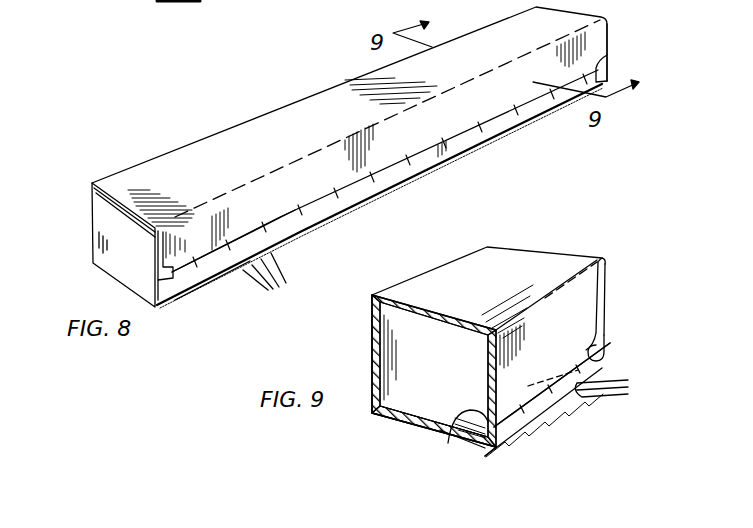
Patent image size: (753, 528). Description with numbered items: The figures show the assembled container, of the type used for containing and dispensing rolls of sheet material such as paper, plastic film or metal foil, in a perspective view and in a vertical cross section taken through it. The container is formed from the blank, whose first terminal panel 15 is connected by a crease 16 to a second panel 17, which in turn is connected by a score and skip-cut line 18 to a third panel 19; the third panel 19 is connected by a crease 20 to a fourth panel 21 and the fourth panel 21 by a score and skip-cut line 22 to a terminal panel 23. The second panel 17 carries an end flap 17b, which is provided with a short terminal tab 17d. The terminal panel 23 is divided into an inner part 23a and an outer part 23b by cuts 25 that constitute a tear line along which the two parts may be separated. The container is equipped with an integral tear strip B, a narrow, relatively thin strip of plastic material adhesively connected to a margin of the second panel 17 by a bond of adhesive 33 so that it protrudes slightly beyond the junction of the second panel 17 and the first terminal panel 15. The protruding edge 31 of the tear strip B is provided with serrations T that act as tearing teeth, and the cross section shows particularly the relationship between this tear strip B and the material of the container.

In FIG. 8, the first terminal panel 15 is at (606, 58).
In FIG. 9, the first terminal panel 15 is at (606, 328).
In FIG. 9, the crease 16 is at (505, 455).
In FIG. 9, the second panel 17 is at (405, 430).
In FIG. 8, the end flap 17b is at (108, 218).
In FIG. 8, the short terminal tab 17d is at (183, 3).
In FIG. 9, the score and skip-cut line 18 is at (388, 420).
In FIG. 9, the third panel 19 is at (376, 343).
In FIG. 8, the crease 20 is at (219, 131).
In FIG. 9, the crease 20 is at (432, 268).
In FIG. 8, the fourth panel 21 is at (337, 110).
In FIG. 9, the fourth panel 21 is at (523, 258).
In FIG. 9, the score and skip-cut line 22 is at (565, 286).
In FIG. 8, the terminal panel 23 is at (340, 203).
In FIG. 9, the terminal panel 23 is at (552, 385).
In FIG. 8, the inner part 23a is at (291, 210).
In FIG. 9, the inner part 23a is at (604, 290).
In FIG. 9, the outer part 23b is at (606, 352).
In FIG. 8, the cuts 25 is at (480, 142).
In FIG. 9, the cuts 25 is at (558, 352).
In FIG. 8, the protruding edge 31 is at (410, 182).
In FIG. 9, the protruding edge 31 is at (537, 428).
In FIG. 9, the bond of adhesive 33 is at (480, 458).
In FIG. 8, the serrations T is at (266, 280).
In FIG. 9, the serrations T is at (613, 388).
In FIG. 8, the tear strip B is at (216, 290).
In FIG. 9, the tear strip B is at (458, 452).